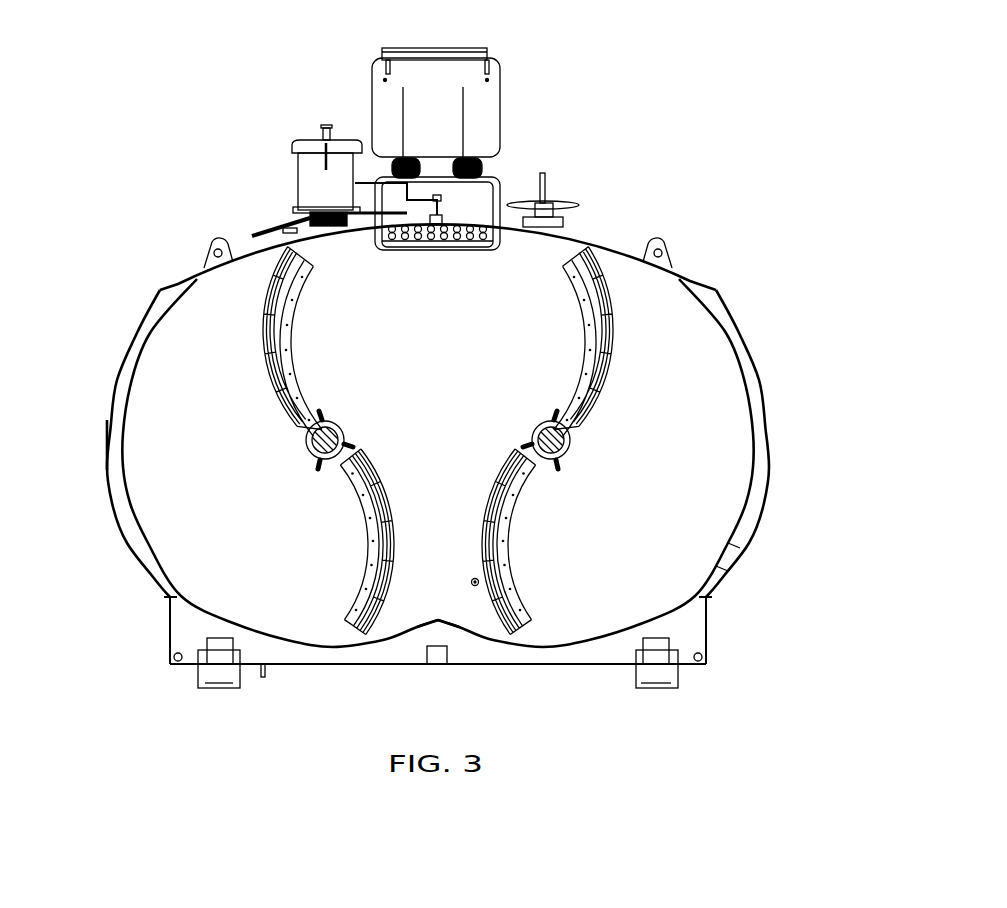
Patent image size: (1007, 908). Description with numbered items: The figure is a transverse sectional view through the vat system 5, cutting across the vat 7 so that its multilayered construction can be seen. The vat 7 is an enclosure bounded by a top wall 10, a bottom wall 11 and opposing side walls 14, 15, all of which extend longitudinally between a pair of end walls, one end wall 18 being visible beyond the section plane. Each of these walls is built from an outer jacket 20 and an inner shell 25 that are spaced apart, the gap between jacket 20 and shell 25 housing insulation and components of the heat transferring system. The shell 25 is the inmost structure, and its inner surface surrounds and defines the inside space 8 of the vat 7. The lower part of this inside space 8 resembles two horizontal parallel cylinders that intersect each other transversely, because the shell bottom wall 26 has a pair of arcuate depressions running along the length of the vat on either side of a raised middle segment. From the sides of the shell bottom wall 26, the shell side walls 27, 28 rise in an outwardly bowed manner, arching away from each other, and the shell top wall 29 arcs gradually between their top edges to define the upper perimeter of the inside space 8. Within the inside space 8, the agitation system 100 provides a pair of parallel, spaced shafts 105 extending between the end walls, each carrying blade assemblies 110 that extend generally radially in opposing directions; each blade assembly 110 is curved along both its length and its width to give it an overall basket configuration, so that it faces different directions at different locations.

The mixing apparatus 5 is at (565, 80).
The vat 7 is at (243, 243).
The inside space 8 is at (680, 524).
The top wall 10 is at (601, 233).
The bottom wall 11 is at (574, 666).
The side wall 14 is at (763, 392).
The side wall 15 is at (117, 513).
The end wall 18 is at (454, 432).
The outer jacket 20 is at (124, 352).
The inner shell 25 is at (118, 437).
The bottom wall of the shell 26 is at (395, 630).
The shell side wall 27 is at (748, 456).
The shell side wall 28 is at (128, 470).
The shell top wall 29 is at (342, 240).
The agitation system 100 is at (655, 322).
The shaft 105 is at (345, 428).
The blade assembly 110 is at (262, 368).